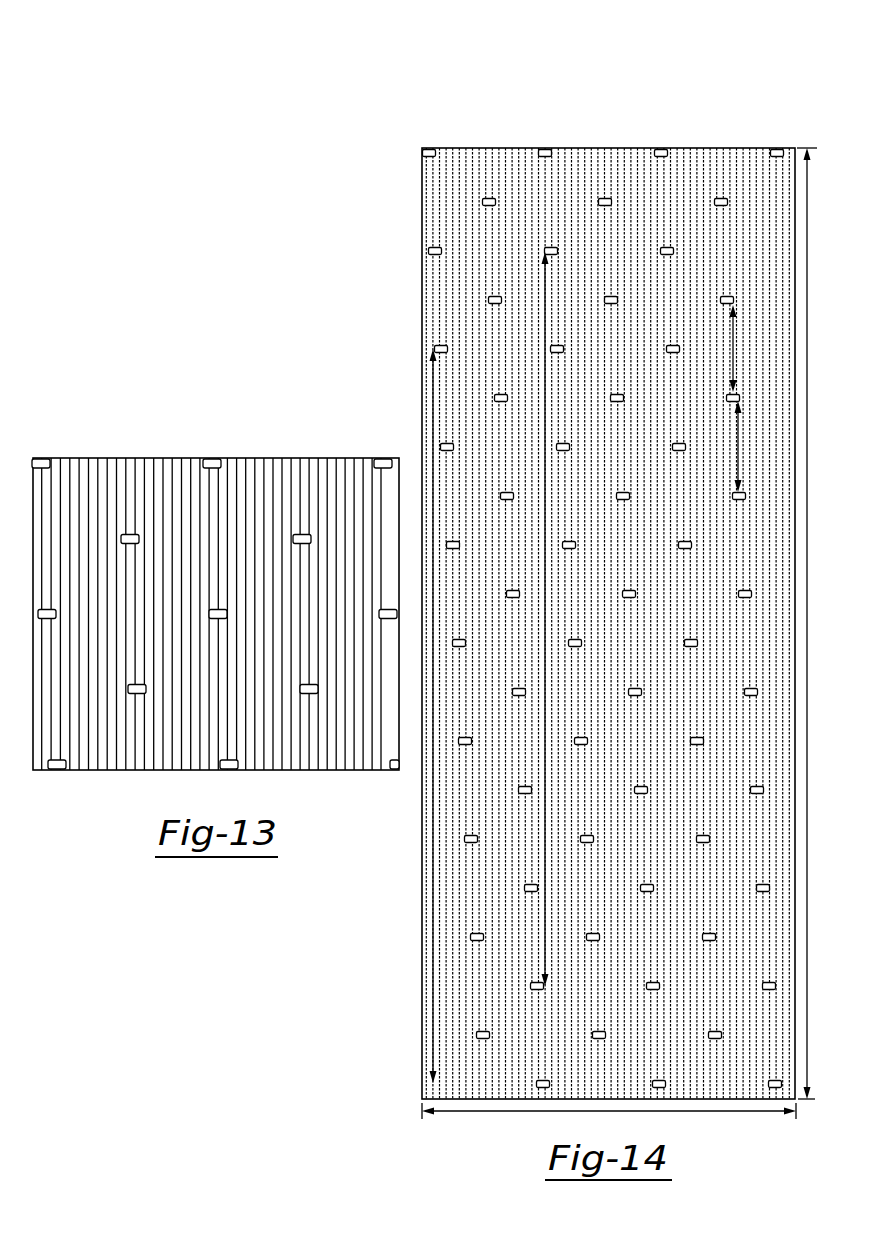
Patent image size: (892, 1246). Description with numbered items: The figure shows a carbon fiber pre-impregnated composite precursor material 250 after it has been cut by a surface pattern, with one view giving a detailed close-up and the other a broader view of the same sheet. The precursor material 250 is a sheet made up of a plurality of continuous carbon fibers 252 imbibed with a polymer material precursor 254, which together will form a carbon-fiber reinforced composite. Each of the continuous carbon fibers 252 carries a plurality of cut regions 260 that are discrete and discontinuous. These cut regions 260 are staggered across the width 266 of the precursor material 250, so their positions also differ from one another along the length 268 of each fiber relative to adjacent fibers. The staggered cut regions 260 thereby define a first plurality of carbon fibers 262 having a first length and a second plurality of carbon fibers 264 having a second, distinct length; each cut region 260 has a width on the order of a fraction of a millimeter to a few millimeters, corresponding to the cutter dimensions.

In FIG. 13, the carbon fiber pre-impregnated composite precursor material 250 is at (129, 440).
In FIG. 14, the carbon fiber pre-impregnated composite precursor material 250 is at (432, 110).
In FIG. 13, the continuous carbon fibers 252 is at (262, 486).
In FIG. 13, the polymer material precursor 254 is at (104, 746).
In FIG. 13, the cut regions 260 is at (213, 459).
In FIG. 14, the cut regions 260 is at (666, 246).
In FIG. 14, the first plurality of carbon fibers 262 is at (545, 418).
In FIG. 14, the second plurality of carbon fibers 264 is at (733, 356).
In FIG. 14, the width 266 is at (490, 1113).
In FIG. 14, the length 268 is at (807, 630).